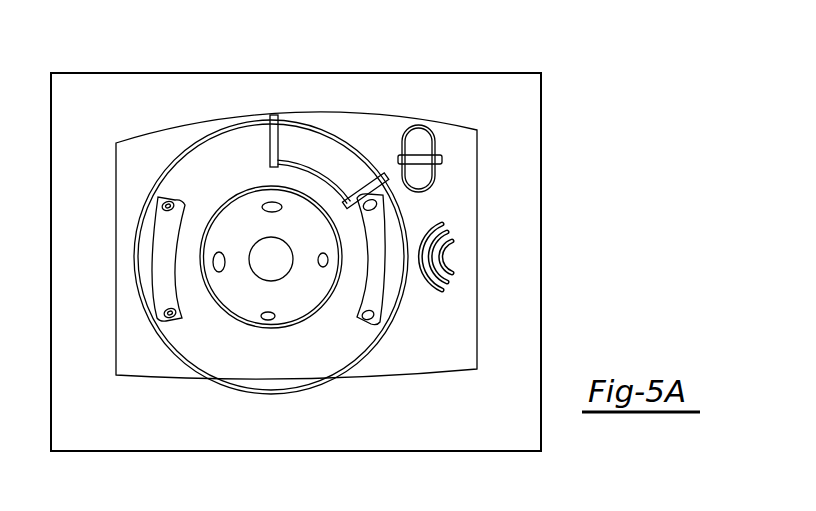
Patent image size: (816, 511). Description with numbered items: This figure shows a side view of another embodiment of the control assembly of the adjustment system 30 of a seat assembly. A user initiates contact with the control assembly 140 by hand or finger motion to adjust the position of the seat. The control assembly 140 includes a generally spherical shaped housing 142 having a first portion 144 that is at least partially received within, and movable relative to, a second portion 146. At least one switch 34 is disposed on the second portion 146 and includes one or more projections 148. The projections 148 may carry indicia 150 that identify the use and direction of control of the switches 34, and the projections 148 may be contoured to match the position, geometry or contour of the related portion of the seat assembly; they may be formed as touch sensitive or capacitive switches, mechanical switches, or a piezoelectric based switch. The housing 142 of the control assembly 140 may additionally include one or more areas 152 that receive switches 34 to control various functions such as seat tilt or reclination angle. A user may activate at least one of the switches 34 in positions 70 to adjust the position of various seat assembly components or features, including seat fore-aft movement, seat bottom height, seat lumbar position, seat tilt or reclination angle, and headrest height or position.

The adjustment system 30 is at (568, 112).
The switch 34 is at (80, 121).
The positions 70 is at (449, 262).
The control assembly 140 is at (114, 345).
The housing 142 is at (178, 161).
The first portion 144 is at (175, 186).
The second portion 146 is at (376, 170).
The projections 148 is at (169, 312).
The indicia 150 is at (274, 312).
The areas 152 is at (263, 265).